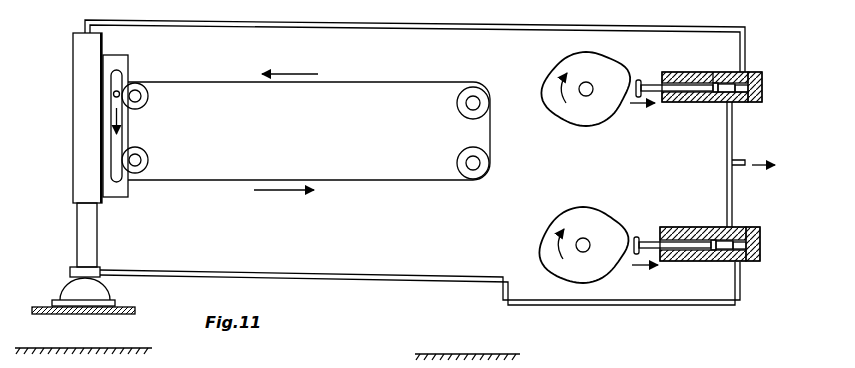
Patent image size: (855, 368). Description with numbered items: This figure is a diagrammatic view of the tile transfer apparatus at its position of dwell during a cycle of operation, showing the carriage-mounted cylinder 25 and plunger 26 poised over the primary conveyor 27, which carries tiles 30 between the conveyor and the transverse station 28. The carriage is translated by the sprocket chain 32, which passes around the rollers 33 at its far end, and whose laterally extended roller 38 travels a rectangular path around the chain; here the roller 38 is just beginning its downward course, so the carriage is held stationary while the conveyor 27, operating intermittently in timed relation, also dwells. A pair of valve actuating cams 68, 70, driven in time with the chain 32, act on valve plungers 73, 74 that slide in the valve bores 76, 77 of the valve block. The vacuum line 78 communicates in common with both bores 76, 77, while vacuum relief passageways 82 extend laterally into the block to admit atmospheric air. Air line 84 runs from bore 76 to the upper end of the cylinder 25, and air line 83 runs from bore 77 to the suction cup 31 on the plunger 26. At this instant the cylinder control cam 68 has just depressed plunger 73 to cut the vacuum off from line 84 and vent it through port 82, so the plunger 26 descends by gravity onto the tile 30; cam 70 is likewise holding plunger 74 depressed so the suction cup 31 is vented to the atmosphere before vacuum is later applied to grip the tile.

The cylinder 25 is at (78, 57).
The plunger 26 is at (84, 222).
The primary conveyor 27 is at (138, 312).
The transverse station 28 is at (515, 353).
The tile 30 is at (128, 296).
The suction cup 31 is at (75, 290).
The sprocket chain 32 is at (407, 180).
The belt rollers 33 is at (468, 115).
The roller 38 is at (122, 92).
The valve actuating cam 68 is at (574, 60).
The valve actuating cam 70 is at (573, 215).
The valve plunger 73 is at (648, 84).
The valve plunger 74 is at (642, 240).
The valve bore 76 is at (762, 88).
The valve bore 77 is at (760, 247).
The vacuum line 78 is at (732, 127).
The vacuum relief passageway 82 is at (713, 72).
The air line 83 is at (427, 277).
The air line 84 is at (425, 29).